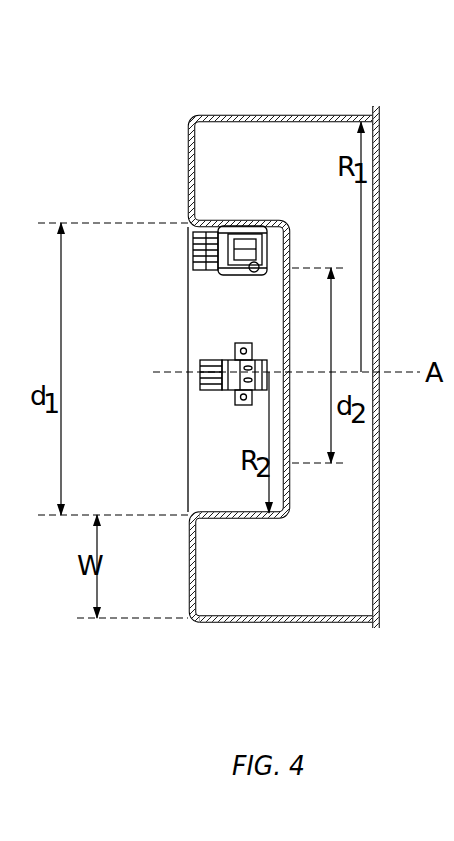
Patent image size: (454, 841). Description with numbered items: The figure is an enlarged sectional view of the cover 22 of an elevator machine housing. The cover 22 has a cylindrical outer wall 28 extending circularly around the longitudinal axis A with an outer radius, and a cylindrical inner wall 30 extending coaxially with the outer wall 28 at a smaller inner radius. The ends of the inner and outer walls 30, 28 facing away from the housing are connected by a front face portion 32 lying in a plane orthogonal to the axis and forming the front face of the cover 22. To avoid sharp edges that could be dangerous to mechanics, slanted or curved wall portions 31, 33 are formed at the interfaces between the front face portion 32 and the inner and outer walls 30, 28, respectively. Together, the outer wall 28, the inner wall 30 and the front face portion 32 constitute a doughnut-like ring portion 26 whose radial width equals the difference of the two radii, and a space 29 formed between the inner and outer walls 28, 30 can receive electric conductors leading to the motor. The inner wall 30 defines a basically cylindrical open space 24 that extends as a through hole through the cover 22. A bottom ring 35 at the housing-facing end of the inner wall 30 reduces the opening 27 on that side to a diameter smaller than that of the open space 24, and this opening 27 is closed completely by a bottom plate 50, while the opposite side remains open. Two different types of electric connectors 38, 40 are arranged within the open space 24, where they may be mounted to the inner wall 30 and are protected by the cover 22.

The cover 22 is at (150, 80).
The open space 24 is at (176, 334).
The ring portion 26 is at (227, 98).
The opening 27 is at (296, 454).
The outer wall 28 is at (285, 623).
The space 29 is at (278, 150).
The inner wall 30 is at (260, 519).
The slanted or curved wall portion 31 is at (189, 618).
The front face portion 32 is at (187, 155).
The slanted or curved wall portion 33 is at (187, 514).
The bottom ring 35 is at (291, 253).
The electric connector 38 is at (187, 306).
The electric connector 40 is at (210, 418).
The bottom plate 50 is at (286, 300).